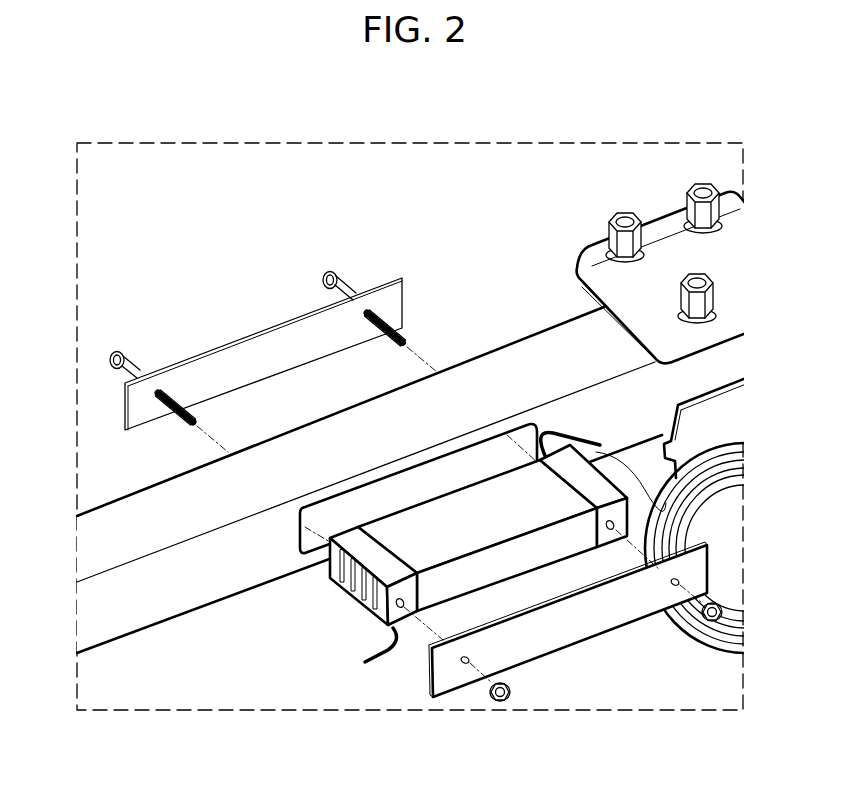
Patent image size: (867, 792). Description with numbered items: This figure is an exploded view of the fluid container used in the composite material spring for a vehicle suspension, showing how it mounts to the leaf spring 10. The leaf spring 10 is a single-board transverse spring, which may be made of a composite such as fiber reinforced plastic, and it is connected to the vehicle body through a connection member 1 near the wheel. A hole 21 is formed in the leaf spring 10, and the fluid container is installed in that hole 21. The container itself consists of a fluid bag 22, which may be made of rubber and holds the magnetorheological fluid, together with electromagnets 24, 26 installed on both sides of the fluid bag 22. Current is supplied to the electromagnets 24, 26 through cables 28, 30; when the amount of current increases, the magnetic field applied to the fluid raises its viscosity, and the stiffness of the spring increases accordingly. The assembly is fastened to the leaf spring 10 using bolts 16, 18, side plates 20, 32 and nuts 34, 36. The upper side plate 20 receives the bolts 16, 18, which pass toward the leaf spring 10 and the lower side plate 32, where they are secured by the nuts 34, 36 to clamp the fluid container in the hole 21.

The connection member 1 is at (727, 652).
The leaf spring 10 is at (550, 347).
The bolt 16 is at (118, 352).
The bolt 18 is at (329, 271).
The side plate 20 is at (248, 336).
The hole 21 is at (415, 490).
The fluid bag 22 is at (480, 517).
The electromagnet 24 is at (363, 613).
The electromagnet 26 is at (650, 503).
The cable 28 is at (388, 660).
The cable 30 is at (590, 427).
The side plate 32 is at (585, 639).
The nut 34 is at (510, 688).
The nut 36 is at (700, 628).